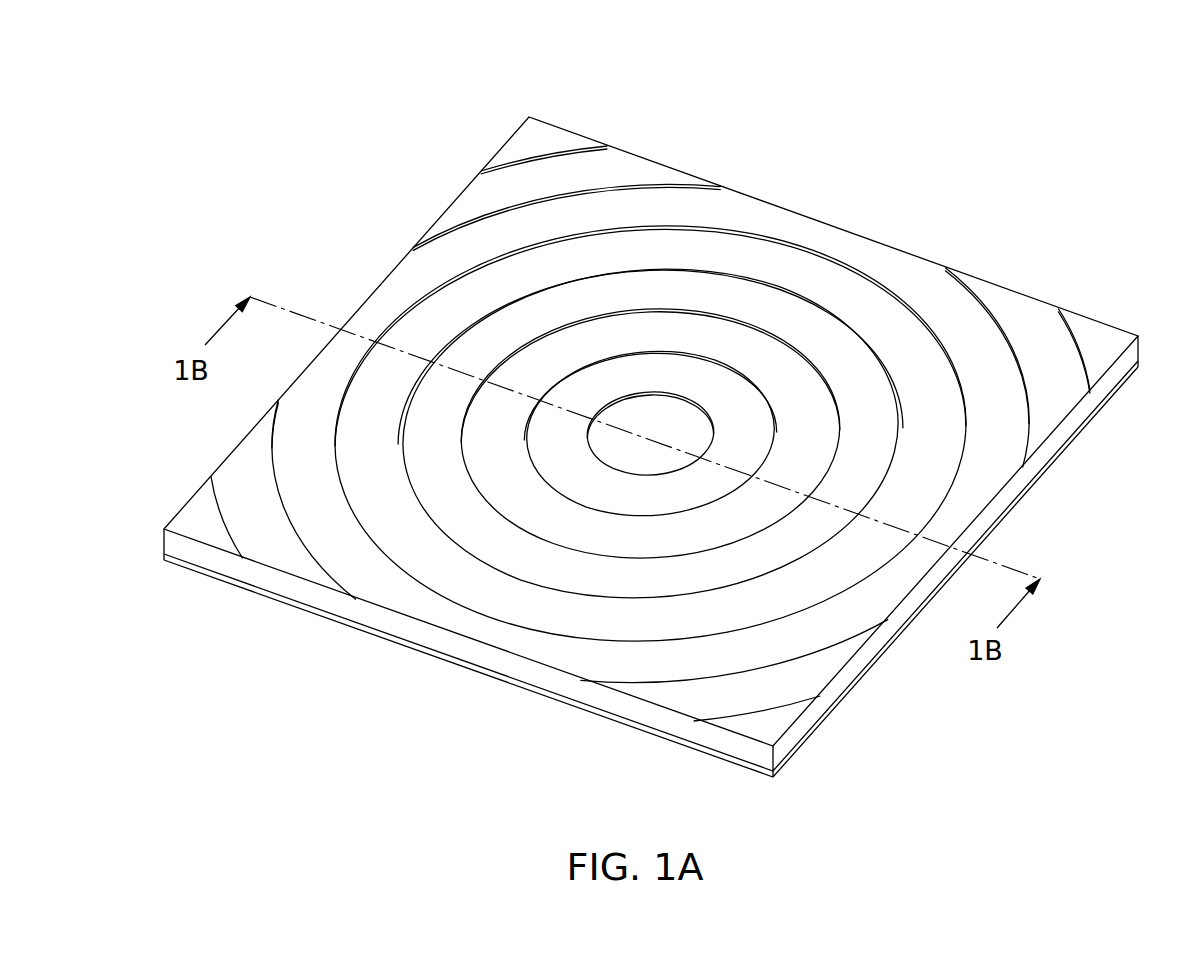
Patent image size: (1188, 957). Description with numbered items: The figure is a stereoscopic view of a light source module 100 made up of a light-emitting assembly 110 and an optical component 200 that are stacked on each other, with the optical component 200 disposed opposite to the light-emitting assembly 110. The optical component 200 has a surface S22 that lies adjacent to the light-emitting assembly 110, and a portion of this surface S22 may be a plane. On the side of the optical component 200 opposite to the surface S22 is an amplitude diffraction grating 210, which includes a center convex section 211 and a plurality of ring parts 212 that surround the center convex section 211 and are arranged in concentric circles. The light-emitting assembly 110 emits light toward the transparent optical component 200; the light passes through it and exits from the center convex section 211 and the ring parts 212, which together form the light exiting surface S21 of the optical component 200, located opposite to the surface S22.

The light source module 100 is at (186, 91).
The light-emitting assembly 110 is at (292, 601).
The optical component 200 is at (1053, 443).
The amplitude diffraction grating 210 is at (980, 92).
The center convex section 211 is at (675, 415).
The ring parts 212 is at (780, 367).
The light exiting surface S21 is at (567, 243).
The surface S22 is at (442, 664).